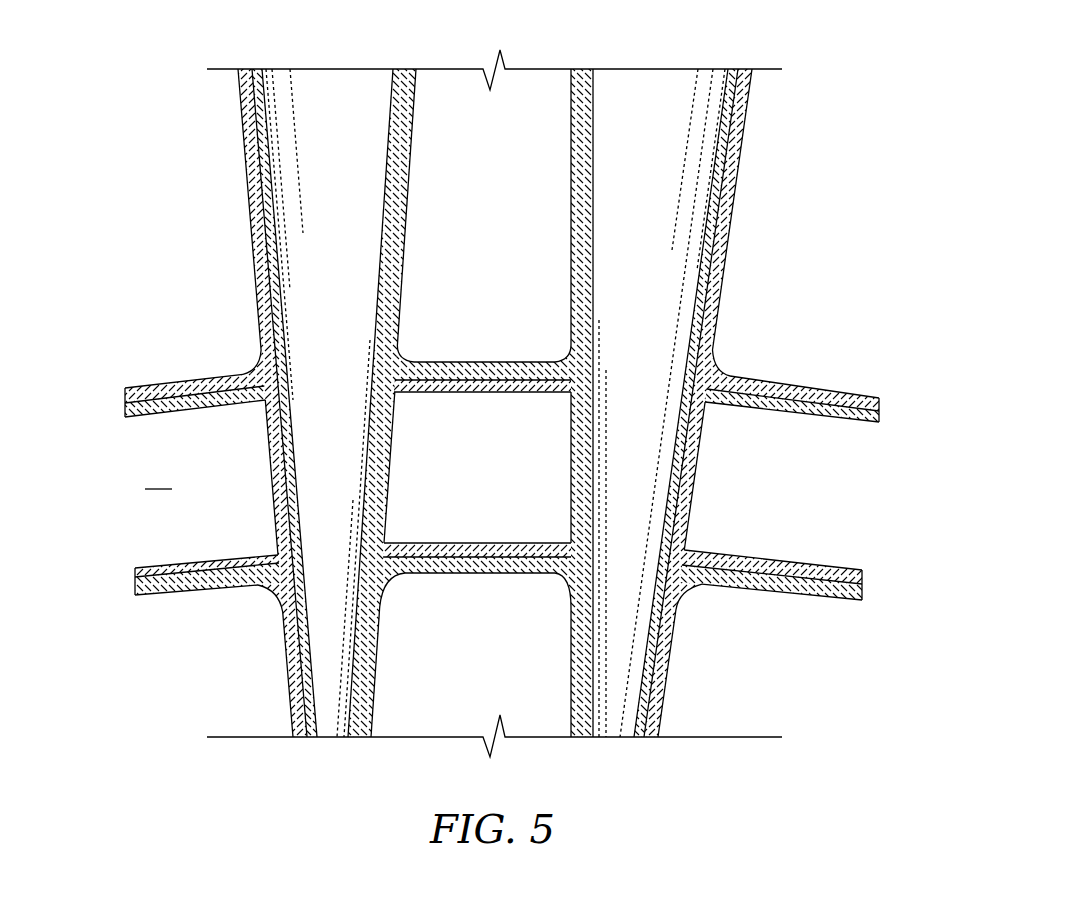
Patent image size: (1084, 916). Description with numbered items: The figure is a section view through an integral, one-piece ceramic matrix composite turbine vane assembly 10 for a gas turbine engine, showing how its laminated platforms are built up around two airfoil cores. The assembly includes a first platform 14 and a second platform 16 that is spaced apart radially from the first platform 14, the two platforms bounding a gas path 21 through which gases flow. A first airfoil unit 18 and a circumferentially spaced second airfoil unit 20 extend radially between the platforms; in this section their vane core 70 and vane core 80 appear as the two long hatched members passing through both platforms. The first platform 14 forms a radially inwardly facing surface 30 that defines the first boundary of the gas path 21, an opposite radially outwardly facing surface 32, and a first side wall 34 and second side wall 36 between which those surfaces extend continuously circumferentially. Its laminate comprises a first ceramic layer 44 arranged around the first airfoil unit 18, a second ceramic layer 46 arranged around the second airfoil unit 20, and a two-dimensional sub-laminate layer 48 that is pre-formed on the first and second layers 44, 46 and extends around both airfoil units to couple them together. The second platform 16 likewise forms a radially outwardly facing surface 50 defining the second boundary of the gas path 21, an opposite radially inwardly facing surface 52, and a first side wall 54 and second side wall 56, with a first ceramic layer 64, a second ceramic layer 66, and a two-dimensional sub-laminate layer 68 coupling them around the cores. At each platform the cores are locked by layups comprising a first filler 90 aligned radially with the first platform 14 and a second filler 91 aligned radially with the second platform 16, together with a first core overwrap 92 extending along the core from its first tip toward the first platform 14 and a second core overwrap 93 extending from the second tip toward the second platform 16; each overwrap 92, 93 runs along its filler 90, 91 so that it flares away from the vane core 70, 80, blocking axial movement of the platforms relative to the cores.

The turbine vane assembly 10 is at (828, 126).
The first platform 14 is at (781, 341).
The second platform 16 is at (787, 639).
The first airfoil unit 18 is at (695, 485).
The second airfoil unit 20 is at (268, 466).
The gas path 21 is at (158, 478).
The radially inwardly facing surface 30 is at (770, 405).
The radially outwardly facing surface 32 is at (791, 384).
The first side wall 34 is at (883, 405).
The second side wall 36 is at (121, 405).
The first ceramic layer 44 is at (503, 398).
The second ceramic layer 46 is at (440, 398).
The 2D sub-laminate layer 48 is at (478, 350).
The radially outwardly facing surface 50 is at (790, 561).
The radially inwardly facing surface 52 is at (786, 591).
The first side wall 54 is at (865, 586).
The second side wall 56 is at (131, 581).
The first ceramic layer 64 is at (521, 534).
The second ceramic layer 66 is at (414, 534).
The 2D sub-laminate layer 68 is at (477, 578).
The vane core 70 is at (741, 143).
The vane core 80 is at (246, 150).
The first filler 90 is at (256, 374).
The second filler 91 is at (278, 592).
The first core overwrap 92 is at (251, 248).
The second core overwrap 93 is at (285, 655).